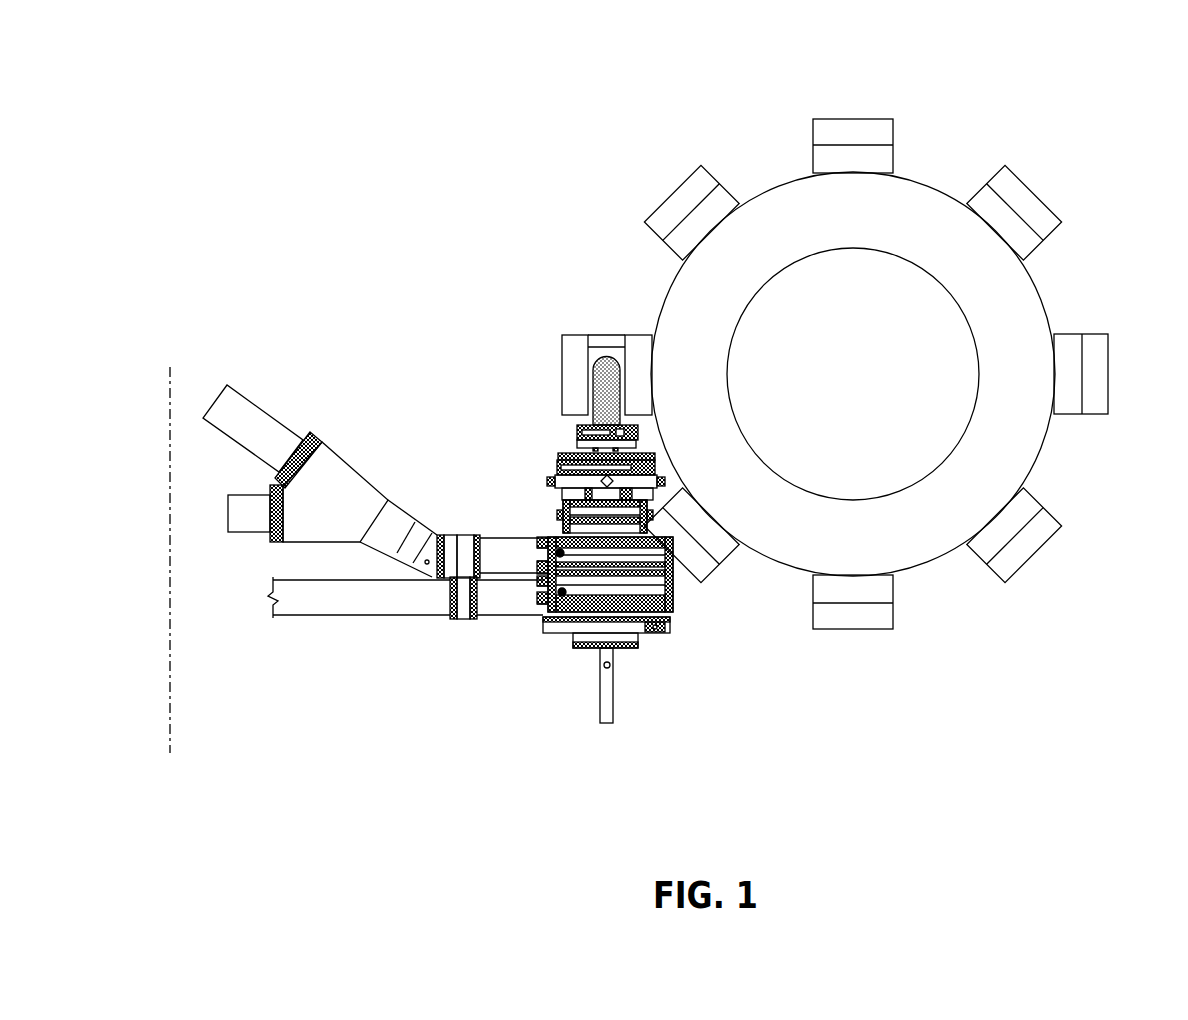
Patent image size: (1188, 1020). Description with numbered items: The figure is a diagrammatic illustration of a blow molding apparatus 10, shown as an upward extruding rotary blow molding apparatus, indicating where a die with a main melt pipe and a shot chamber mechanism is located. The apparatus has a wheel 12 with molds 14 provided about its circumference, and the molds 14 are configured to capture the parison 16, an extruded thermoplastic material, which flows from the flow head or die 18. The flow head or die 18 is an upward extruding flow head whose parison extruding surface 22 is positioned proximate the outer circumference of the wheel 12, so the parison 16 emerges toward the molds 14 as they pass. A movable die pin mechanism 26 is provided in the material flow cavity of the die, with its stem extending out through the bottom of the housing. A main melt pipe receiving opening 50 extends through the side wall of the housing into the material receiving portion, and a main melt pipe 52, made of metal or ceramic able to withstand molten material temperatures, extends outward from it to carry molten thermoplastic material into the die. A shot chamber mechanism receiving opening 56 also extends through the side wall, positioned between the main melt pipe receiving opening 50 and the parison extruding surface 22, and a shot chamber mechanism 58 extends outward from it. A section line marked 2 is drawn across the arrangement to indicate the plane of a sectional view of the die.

The blow molding apparatus 10 is at (1068, 108).
The wheel 12 is at (1040, 287).
The molds 14 is at (860, 122).
The parison 16 is at (603, 378).
The flow head or die 18 is at (642, 567).
The parison extruding surface 22 is at (587, 417).
The movable die pin mechanism 26 is at (593, 685).
The main melt pipe receiving opening 50 is at (540, 603).
The main melt pipe 52 is at (328, 612).
The shot chamber mechanism receiving opening 56 is at (535, 543).
The shot chamber mechanism 58 is at (455, 517).
The section line 2 is at (162, 367).